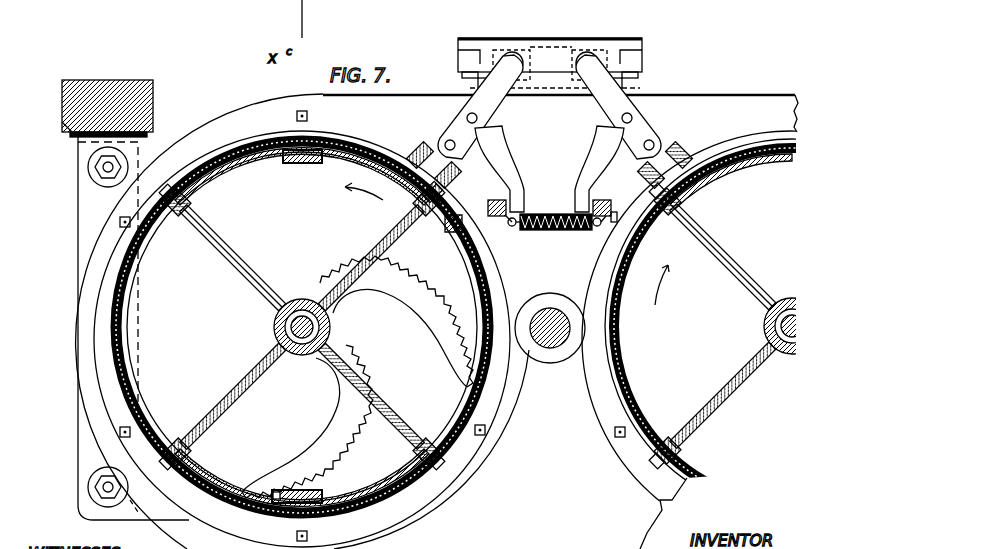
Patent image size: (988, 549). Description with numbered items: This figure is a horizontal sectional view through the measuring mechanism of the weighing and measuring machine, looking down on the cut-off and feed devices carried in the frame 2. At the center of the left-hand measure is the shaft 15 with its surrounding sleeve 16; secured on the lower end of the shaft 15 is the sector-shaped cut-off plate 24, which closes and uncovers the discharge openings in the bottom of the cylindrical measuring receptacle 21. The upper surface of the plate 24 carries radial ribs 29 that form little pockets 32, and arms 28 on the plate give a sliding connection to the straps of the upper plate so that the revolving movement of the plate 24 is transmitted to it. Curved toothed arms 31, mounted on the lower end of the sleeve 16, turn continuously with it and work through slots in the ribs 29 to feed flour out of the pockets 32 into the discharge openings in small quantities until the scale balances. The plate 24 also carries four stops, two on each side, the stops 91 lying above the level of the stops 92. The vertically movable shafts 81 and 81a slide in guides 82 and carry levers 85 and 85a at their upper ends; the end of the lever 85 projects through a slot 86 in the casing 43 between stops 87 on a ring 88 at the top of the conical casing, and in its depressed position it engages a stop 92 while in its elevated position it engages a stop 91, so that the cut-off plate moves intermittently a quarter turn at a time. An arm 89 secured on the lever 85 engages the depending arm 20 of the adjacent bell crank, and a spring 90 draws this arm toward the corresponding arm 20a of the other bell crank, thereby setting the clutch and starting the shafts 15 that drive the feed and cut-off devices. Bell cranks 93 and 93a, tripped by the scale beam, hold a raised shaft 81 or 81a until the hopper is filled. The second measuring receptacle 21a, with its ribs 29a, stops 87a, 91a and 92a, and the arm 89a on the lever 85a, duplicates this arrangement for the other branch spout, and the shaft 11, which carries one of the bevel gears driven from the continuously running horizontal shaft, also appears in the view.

The frame 2 is at (118, 80).
The shaft 11 is at (551, 349).
The shaft 15 is at (278, 337).
The sleeve 16 is at (272, 318).
The depending arm 20 is at (507, 208).
The stop block 20a is at (612, 192).
The cylindrical receptacle 21 is at (477, 402).
The rim ring 21a is at (608, 355).
The cut-off plate 24 is at (284, 322).
The arms 28 is at (293, 160).
The radial ribs 29 is at (207, 232).
The spoke 29a is at (726, 258).
The curved toothed arms 31 is at (397, 283).
The pockets 32 is at (255, 266).
The casing 43 is at (456, 222).
The vertically movable shaft 81 is at (513, 52).
The vertically movable shaft 81a is at (603, 45).
The guides 82 is at (557, 44).
The lever 85 is at (483, 103).
The lever 85a is at (614, 98).
The slot 86 is at (441, 196).
The stops 87 is at (431, 150).
The shoe 87a is at (677, 142).
The ring 88 is at (302, 333).
The arm 89 is at (504, 170).
The pawl arm 89a is at (612, 166).
The spring 90 is at (556, 230).
The stops 91 is at (182, 187).
The clamp block 91a is at (670, 438).
The stops 92 is at (412, 204).
The clamp block 92a is at (675, 212).
The bell cranks 93 is at (458, 62).
The bracket end 93a is at (642, 60).